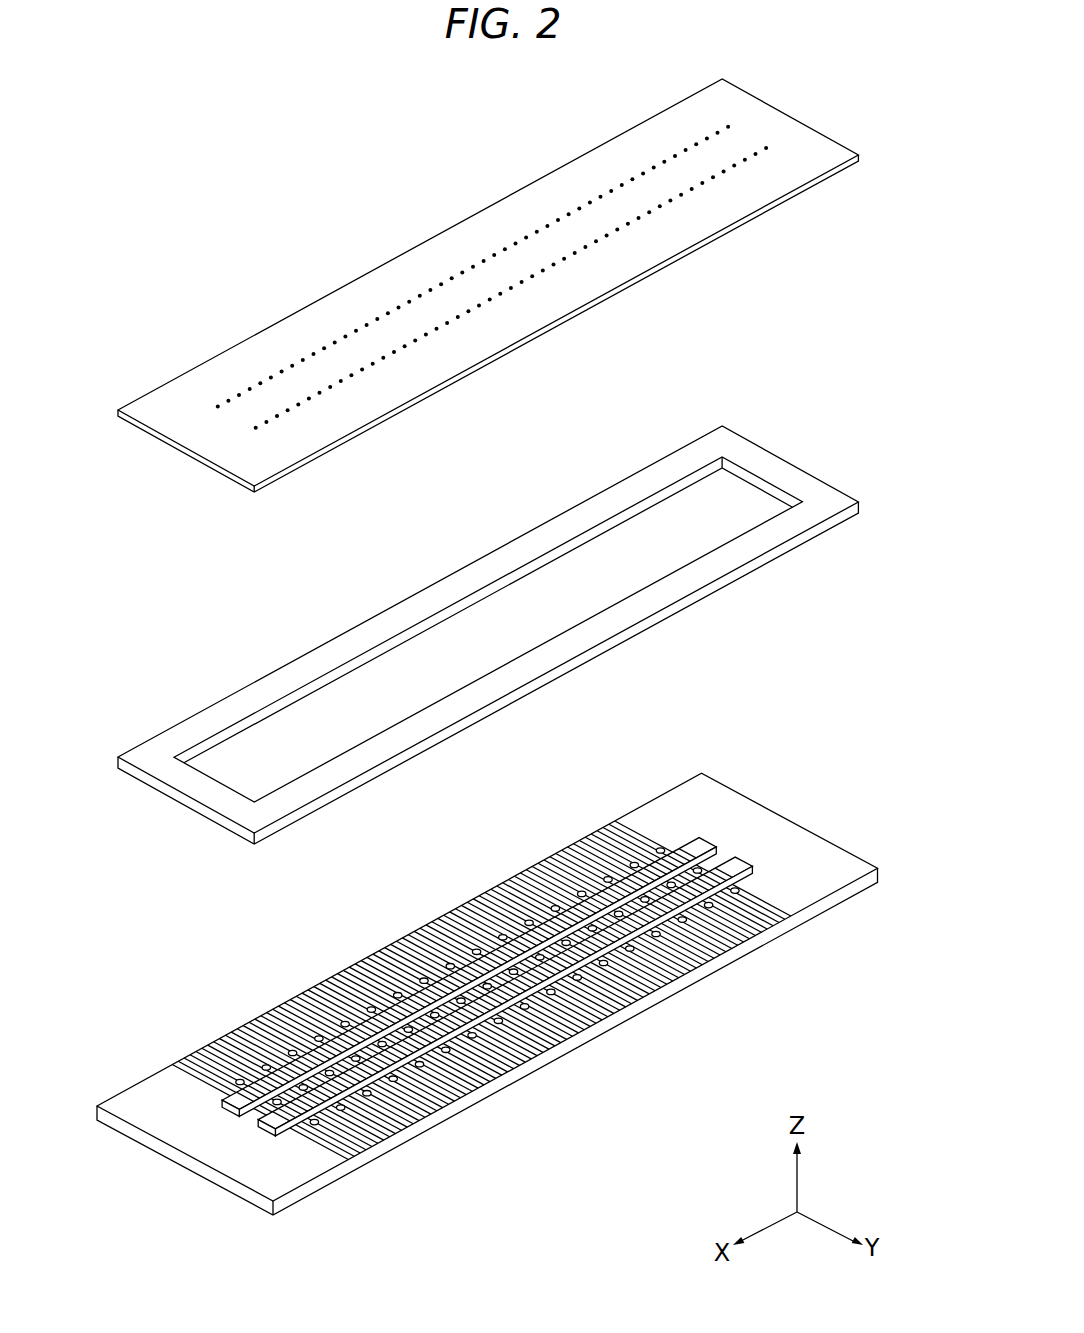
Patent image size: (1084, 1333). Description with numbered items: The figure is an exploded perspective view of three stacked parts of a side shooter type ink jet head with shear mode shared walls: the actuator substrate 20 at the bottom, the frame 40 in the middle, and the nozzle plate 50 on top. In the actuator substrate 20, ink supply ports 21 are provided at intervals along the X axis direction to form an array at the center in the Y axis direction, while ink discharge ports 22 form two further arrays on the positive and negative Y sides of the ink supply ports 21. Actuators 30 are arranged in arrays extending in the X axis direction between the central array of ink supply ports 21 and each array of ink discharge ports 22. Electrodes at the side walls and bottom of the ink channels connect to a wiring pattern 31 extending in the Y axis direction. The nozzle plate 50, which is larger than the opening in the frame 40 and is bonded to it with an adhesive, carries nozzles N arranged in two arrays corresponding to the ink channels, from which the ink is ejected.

The actuator substrate 20 is at (147, 1097).
The ink supply ports 21 is at (273, 1103).
The ink discharge ports 22 is at (240, 1082).
The actuators 30 is at (703, 838).
The wiring pattern 31 is at (413, 942).
The frame 40 is at (147, 750).
The nozzle plate 50 is at (184, 390).
The nozzles N is at (718, 133).